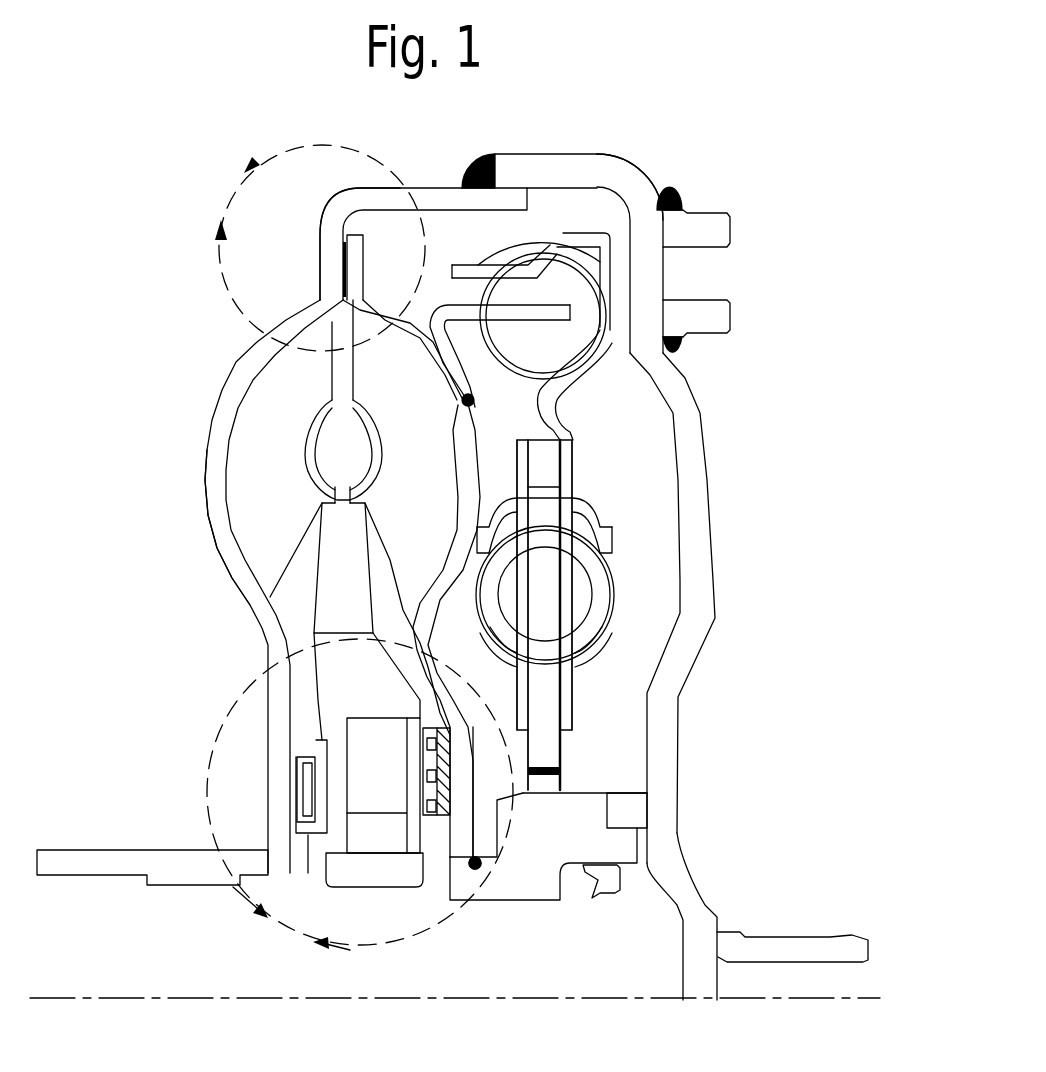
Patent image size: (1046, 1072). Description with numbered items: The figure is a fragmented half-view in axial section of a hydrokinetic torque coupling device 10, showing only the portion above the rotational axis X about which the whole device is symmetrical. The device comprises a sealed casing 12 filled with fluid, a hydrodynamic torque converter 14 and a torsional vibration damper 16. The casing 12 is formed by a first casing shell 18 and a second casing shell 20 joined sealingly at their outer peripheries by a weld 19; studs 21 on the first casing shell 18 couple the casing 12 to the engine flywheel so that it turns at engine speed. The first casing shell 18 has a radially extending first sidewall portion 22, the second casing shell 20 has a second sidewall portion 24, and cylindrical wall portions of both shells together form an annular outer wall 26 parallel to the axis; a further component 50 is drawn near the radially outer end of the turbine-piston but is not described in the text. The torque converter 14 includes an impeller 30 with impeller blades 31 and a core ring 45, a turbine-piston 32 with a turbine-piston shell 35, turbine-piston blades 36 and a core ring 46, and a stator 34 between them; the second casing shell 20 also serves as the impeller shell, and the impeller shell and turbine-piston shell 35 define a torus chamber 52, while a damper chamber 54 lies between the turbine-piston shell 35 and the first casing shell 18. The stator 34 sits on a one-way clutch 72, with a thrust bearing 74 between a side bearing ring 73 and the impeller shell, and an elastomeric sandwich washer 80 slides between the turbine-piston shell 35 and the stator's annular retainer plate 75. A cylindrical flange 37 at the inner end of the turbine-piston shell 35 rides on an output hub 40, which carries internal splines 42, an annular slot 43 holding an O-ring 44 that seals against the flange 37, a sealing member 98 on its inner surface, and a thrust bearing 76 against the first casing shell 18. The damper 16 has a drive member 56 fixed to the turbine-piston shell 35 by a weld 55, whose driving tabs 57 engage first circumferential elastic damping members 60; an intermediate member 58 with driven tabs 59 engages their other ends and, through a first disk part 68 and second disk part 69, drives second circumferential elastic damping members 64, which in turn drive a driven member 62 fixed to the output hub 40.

The hydrokinetic torque coupling device 10 is at (752, 145).
The sealed casing 12 is at (627, 160).
The hydrodynamic torque converter 14 is at (195, 412).
The torsional vibration damper 16 is at (610, 478).
The first casing shell 18 is at (728, 522).
The weld 19 is at (470, 165).
The second casing shell 20 is at (195, 480).
The studs 21 is at (730, 228).
The first sidewall portion 22 is at (652, 282).
The second sidewall portion 24 is at (330, 257).
The annular outer wall 26 is at (440, 178).
The impeller 30 is at (244, 498).
The impeller blades 31 is at (252, 560).
The turbine-piston 32 is at (447, 500).
The stator 34 is at (298, 595).
The turbine-piston shell 35 is at (438, 596).
The turbine-piston blades 36 is at (406, 560).
The cylindrical flange 37 is at (483, 847).
The output hub 40 is at (600, 847).
The internal splines 42 is at (545, 900).
The annular slot 43 is at (475, 870).
The O-ring 44 is at (475, 863).
The core ring 45 is at (313, 425).
The core ring 46 is at (372, 425).
The pin head 50 is at (384, 270).
The torus chamber 52 is at (331, 460).
The damper chamber 54 is at (633, 533).
The weld 55 is at (474, 402).
The drive member 56 is at (427, 325).
The driving tabs 57 is at (534, 315).
The intermediate member 58 is at (590, 232).
The driven tabs 59 is at (525, 268).
The first circumferential elastic damping members 60 is at (673, 373).
The driven member 62 is at (545, 748).
The second circumferential elastic damping members 64 is at (603, 590).
The first disk part 68 is at (568, 716).
The second disk part 69 is at (523, 687).
The one-way clutch 72 is at (364, 778).
The side bearing ring 73 is at (316, 745).
The thrust bearing 74 is at (305, 795).
The annular retainer plate 75 is at (420, 747).
The thrust bearing 76 is at (637, 807).
The elastomeric sandwich washer 80 is at (428, 835).
The sealing member 98 is at (608, 898).